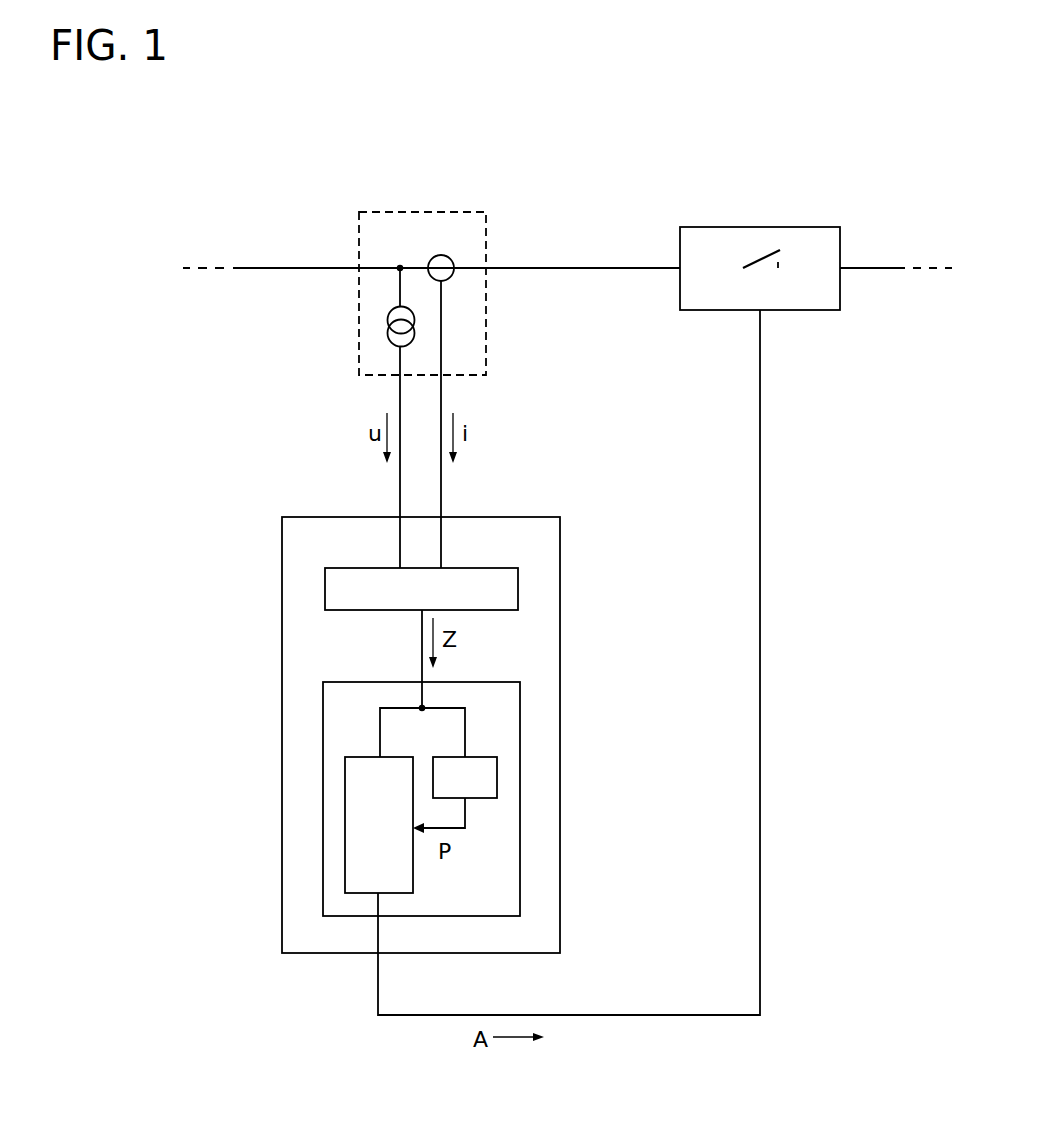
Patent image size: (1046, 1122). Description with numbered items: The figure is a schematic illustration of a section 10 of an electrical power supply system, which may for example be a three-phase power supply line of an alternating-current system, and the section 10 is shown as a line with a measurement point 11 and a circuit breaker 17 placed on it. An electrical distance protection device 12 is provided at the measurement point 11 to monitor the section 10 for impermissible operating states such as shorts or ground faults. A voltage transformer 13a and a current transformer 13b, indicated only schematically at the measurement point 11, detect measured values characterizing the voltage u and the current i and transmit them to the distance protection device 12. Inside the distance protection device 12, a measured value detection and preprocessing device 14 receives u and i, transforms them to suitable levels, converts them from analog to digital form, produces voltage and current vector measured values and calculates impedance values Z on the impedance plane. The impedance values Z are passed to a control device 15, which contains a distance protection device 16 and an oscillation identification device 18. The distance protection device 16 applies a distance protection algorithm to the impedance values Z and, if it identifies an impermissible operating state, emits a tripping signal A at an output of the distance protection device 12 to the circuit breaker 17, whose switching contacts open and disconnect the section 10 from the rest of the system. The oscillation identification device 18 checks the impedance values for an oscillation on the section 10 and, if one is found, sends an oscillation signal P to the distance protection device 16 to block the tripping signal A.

The section of an electrical power supply system 10 is at (558, 164).
The measurement point 11 is at (420, 212).
The electrical distance protection device 12 is at (282, 726).
The voltage transformer 13a is at (388, 318).
The current transformer 13b is at (452, 276).
The measured value detection and preprocessing device 14 is at (518, 583).
The control device 15 is at (520, 812).
The distance protection device 16 is at (365, 757).
The circuit breaker 17 is at (760, 227).
The oscillation identification device 18 is at (476, 757).